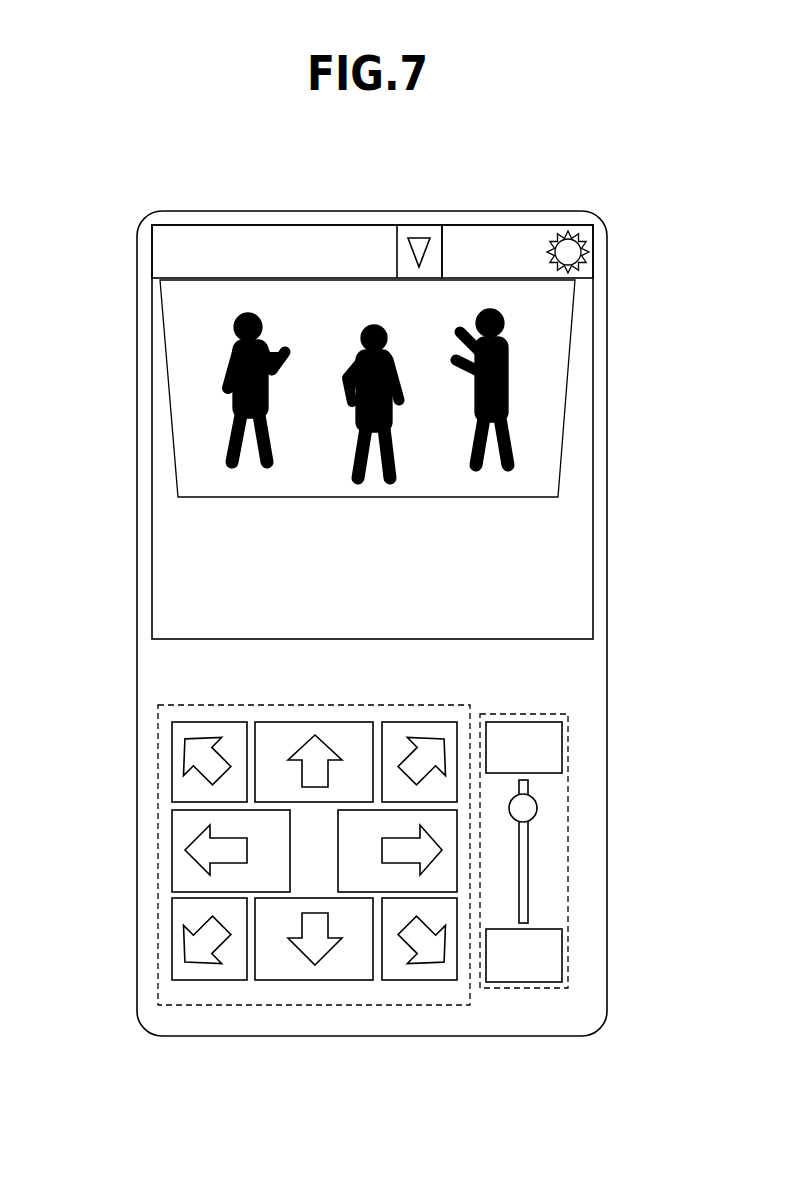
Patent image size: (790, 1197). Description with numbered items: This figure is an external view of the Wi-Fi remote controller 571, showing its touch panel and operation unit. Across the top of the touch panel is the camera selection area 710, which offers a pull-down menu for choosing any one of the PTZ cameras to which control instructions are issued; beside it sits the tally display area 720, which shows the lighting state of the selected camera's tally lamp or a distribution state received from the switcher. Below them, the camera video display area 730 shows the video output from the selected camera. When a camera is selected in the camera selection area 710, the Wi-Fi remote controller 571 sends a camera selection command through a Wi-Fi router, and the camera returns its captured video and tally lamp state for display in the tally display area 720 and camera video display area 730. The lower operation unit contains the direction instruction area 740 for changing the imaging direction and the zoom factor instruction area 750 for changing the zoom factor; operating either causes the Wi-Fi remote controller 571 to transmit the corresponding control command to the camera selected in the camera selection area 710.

The Wi-Fi remote controller 571 is at (137, 593).
The camera selection area 710 is at (330, 225).
The tally display area 720 is at (523, 225).
The camera video display area 730 is at (577, 555).
The direction instruction area 740 is at (158, 820).
The zoom factor instruction area 750 is at (568, 838).